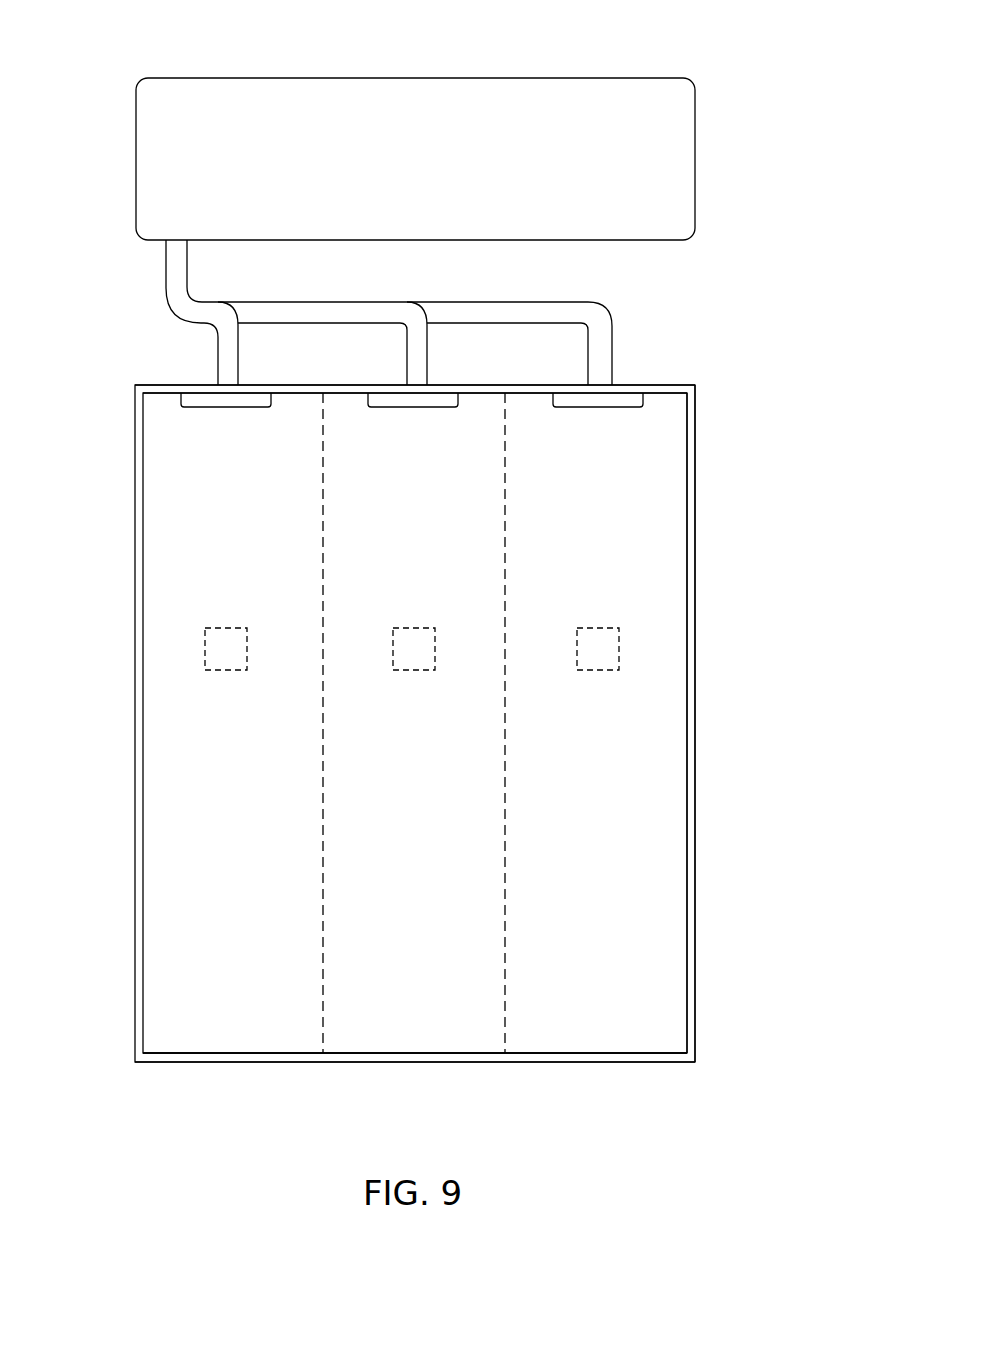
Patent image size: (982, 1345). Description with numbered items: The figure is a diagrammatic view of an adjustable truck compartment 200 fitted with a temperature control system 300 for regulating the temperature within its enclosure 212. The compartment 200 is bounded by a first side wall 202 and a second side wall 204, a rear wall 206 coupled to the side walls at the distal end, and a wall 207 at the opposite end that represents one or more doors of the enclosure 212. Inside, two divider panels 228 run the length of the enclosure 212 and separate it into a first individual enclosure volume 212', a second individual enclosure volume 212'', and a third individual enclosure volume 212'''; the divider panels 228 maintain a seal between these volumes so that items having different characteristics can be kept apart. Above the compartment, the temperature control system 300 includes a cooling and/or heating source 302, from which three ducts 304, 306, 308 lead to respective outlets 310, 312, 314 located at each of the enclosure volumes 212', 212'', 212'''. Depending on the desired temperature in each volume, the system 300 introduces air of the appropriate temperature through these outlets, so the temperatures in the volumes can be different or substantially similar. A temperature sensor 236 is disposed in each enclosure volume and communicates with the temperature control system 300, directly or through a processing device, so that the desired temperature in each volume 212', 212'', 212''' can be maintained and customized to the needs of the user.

The adjustable truck compartment 200 is at (765, 86).
The first side wall 202 is at (135, 988).
The second side wall 204 is at (696, 838).
The rear wall 206 is at (663, 385).
The wall 207 is at (398, 1062).
The enclosure 212 is at (427, 1067).
The first individual enclosure volume 212' is at (199, 723).
The second individual enclosure volume 212'' is at (290, 554).
The third individual enclosure volume 212''' is at (639, 559).
The divider panel 228 is at (325, 840).
The temperature sensor 236 is at (230, 671).
The temperature control system 300 is at (176, 68).
The cooling and/or heating source 302 is at (136, 172).
The duct 304 is at (166, 278).
The duct 306 is at (297, 302).
The duct 308 is at (517, 302).
The outlet 310 is at (207, 407).
The outlet 312 is at (398, 407).
The outlet 314 is at (582, 407).